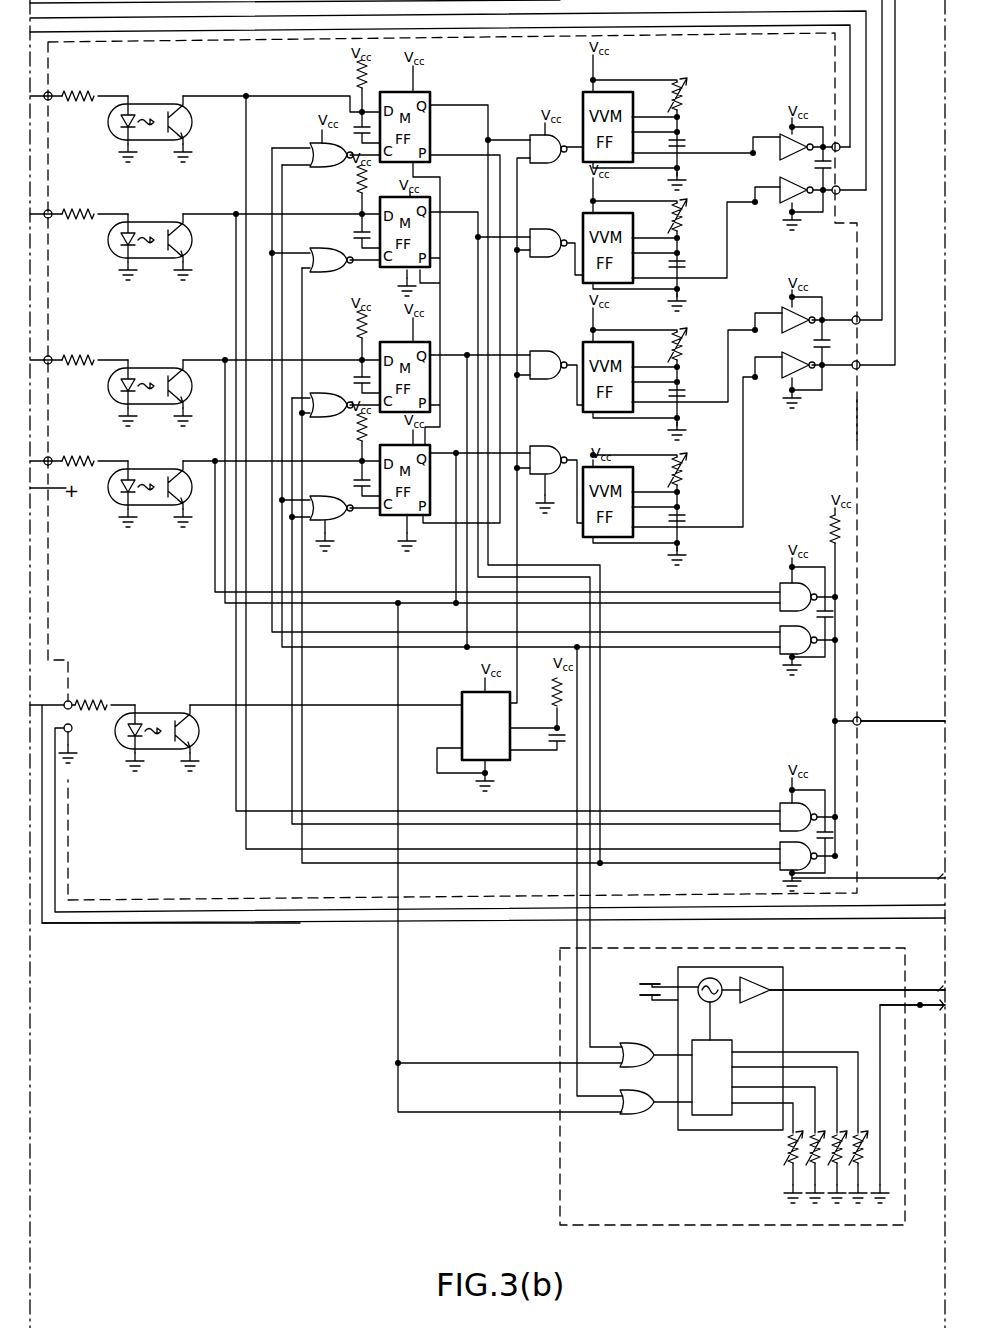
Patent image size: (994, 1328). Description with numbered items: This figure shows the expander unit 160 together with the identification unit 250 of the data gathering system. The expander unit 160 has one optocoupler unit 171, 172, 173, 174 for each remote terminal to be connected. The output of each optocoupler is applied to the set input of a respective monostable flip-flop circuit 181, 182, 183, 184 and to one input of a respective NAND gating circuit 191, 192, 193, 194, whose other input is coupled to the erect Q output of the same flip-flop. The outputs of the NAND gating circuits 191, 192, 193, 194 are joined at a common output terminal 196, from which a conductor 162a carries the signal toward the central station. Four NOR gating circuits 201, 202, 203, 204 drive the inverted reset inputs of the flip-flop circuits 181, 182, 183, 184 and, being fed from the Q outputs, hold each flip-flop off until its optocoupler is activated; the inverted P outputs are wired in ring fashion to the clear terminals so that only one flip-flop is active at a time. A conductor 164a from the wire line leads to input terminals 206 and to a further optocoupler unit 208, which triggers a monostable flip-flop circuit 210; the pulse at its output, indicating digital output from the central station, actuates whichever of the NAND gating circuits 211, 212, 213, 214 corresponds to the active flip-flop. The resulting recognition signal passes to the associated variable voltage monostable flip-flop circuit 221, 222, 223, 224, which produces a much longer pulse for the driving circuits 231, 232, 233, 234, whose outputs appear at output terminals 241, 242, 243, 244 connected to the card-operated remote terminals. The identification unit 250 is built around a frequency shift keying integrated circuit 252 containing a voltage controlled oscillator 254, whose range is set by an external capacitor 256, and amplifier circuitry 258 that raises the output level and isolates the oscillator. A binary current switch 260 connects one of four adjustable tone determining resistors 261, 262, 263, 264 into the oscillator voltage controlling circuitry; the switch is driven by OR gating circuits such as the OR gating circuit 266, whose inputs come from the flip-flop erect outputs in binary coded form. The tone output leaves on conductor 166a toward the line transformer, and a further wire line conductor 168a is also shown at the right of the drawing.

The expander unit 160 is at (857, 420).
The conductor 162a is at (874, 725).
The conductor 164a is at (55, 923).
The conductor 166a is at (918, 986).
The output line 168a is at (918, 1010).
The optocoupler unit 171 is at (171, 98).
The optocoupler unit 172 is at (171, 216).
The optocoupler unit 173 is at (171, 362).
The optocoupler unit 174 is at (171, 463).
The flip-flop circuit 181 is at (422, 92).
The flip-flop circuit 182 is at (430, 260).
The flip-flop circuit 183 is at (431, 344).
The flip-flop circuit 184 is at (398, 515).
The NAND gating circuit 191 is at (780, 586).
The NAND gating circuit 192 is at (780, 629).
The NAND gating circuit 193 is at (780, 806).
The NAND gating circuit 194 is at (780, 846).
The output terminal 196 is at (860, 717).
The NOR gating circuit 201 is at (330, 168).
The NOR gating circuit 202 is at (336, 282).
The NOR gating circuit 203 is at (336, 428).
The NOR gating circuit 204 is at (338, 522).
The input terminals 206 is at (72, 703).
The optocoupler unit 208 is at (180, 706).
The monostable flip-flop circuit 210 is at (462, 724).
The NAND gating circuit 211 is at (547, 166).
The NAND gating circuit 212 is at (552, 231).
The NAND gating circuit 213 is at (552, 356).
The NAND gating circuit 214 is at (554, 450).
The variable voltage monostable flip-flop circuit 221 is at (581, 100).
The variable voltage monostable flip-flop circuit 222 is at (581, 221).
The variable voltage monostable flip-flop circuit 223 is at (583, 350).
The variable voltage monostable flip-flop circuit 224 is at (581, 459).
The driving circuit 231 is at (785, 134).
The driving circuit 232 is at (785, 200).
The driving circuit 233 is at (787, 308).
The driving circuit 234 is at (787, 376).
The output terminal 241 is at (836, 139).
The output terminal 242 is at (838, 196).
The output terminal 243 is at (843, 310).
The output terminal 244 is at (843, 377).
The identification unit 250 is at (796, 948).
The integrated circuit 252 is at (783, 1026).
The voltage controlled oscillator 254 is at (720, 1000).
The external capacitor 256 is at (646, 984).
The amplifier circuitry 258 is at (770, 988).
The binary current switch 260 is at (648, 1092).
The adjustable tone determining resistor 261 is at (793, 1153).
The adjustable tone determining resistor 262 is at (813, 1160).
The adjustable tone determining resistor 263 is at (860, 1165).
The adjustable tone determining resistor 264 is at (841, 1149).
The OR gating circuit 266 is at (644, 1037).